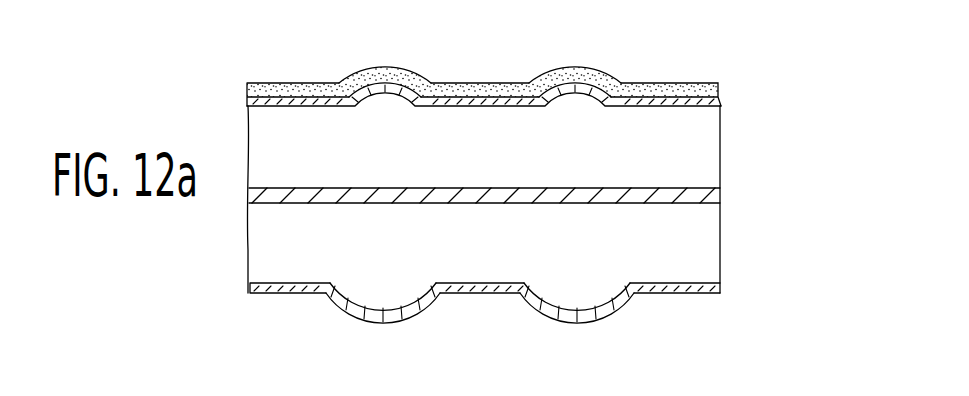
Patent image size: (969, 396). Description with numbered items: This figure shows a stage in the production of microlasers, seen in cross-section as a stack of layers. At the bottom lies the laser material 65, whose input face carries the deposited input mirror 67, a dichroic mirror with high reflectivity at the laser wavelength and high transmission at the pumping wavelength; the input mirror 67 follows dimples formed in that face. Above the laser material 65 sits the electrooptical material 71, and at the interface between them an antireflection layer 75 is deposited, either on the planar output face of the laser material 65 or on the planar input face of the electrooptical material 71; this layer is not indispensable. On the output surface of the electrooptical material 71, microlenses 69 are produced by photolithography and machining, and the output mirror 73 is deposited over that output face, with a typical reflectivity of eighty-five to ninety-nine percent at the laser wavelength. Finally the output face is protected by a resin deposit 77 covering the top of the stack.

The laser material 65 is at (697, 258).
The input mirror 67 is at (340, 303).
The microlenses 69 is at (390, 100).
The electrooptical material 71 is at (708, 140).
The output mirror 73 is at (362, 72).
The antireflection layer 75 is at (703, 197).
The resin deposit 77 is at (683, 90).